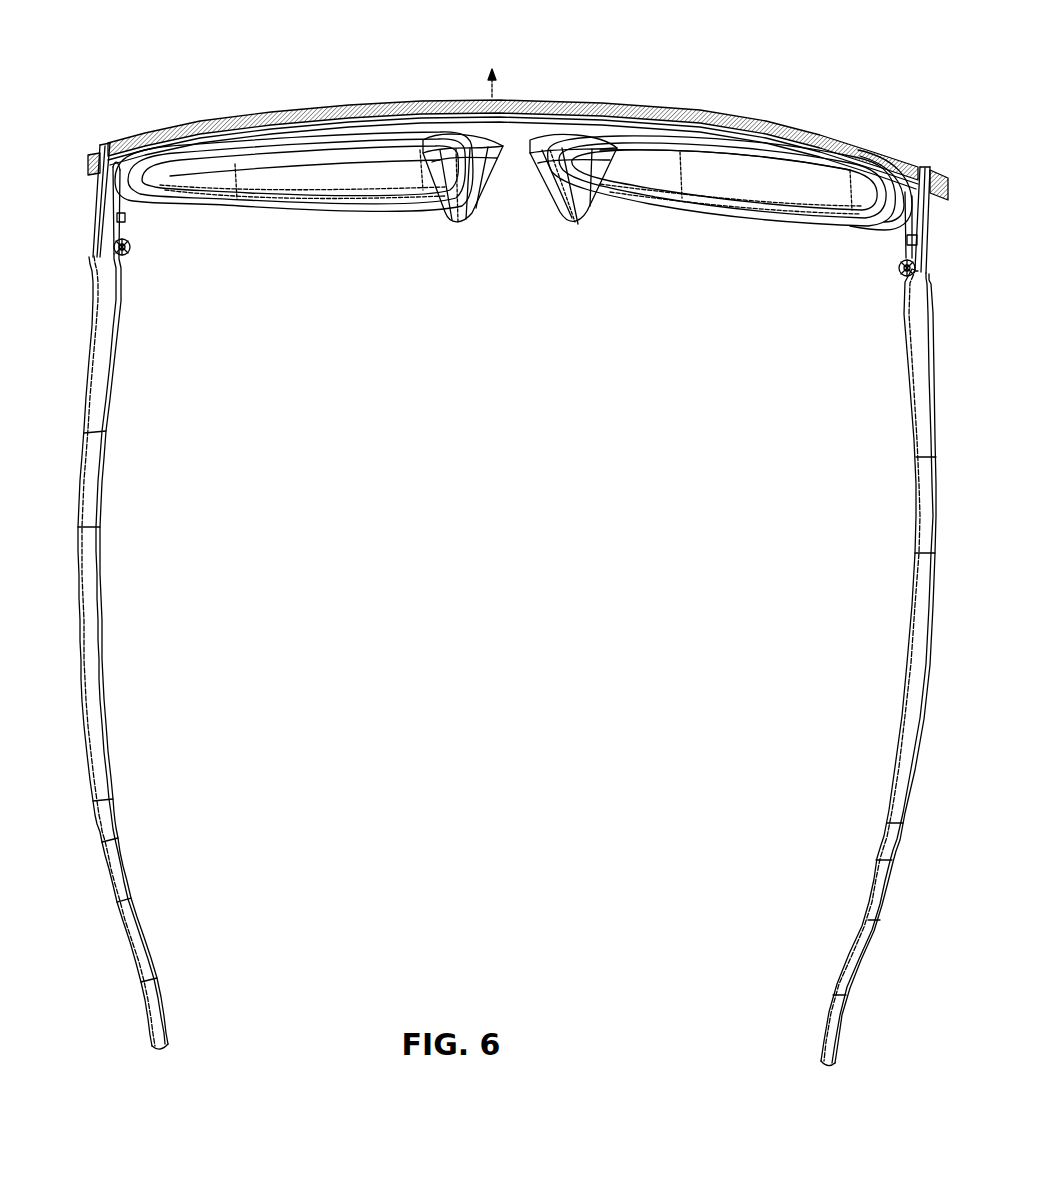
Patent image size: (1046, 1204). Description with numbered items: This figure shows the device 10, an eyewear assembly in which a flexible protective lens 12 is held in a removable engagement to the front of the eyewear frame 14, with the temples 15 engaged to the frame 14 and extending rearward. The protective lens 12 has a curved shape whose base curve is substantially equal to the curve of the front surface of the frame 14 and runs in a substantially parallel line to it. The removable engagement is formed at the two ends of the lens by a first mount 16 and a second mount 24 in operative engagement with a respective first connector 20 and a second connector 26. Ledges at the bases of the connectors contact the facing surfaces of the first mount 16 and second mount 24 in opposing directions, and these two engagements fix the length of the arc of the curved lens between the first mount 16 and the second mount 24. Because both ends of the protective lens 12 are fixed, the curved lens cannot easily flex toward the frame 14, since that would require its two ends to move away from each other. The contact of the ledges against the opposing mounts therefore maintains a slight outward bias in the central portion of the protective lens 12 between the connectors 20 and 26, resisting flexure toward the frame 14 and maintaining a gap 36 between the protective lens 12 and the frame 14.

The device 10 is at (178, 95).
The protective lens 12 is at (250, 115).
The eyewear frame 14 is at (133, 163).
The temples 15 is at (108, 276).
The first mount 16 is at (914, 184).
The first connector 20 is at (938, 168).
The second mount 24 is at (104, 152).
The second connector 26 is at (98, 152).
The gap 36 is at (372, 104).